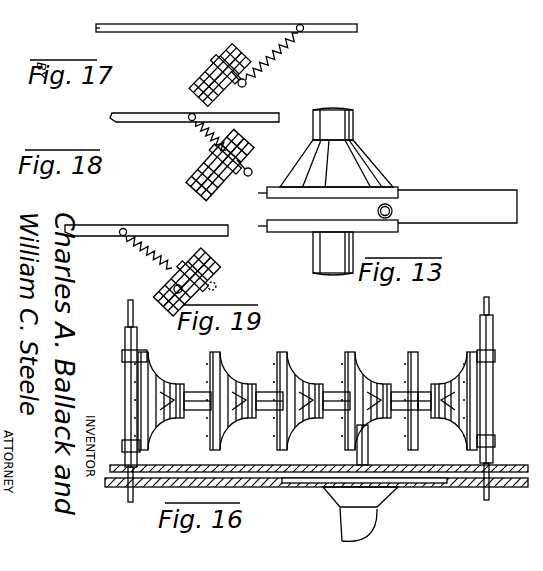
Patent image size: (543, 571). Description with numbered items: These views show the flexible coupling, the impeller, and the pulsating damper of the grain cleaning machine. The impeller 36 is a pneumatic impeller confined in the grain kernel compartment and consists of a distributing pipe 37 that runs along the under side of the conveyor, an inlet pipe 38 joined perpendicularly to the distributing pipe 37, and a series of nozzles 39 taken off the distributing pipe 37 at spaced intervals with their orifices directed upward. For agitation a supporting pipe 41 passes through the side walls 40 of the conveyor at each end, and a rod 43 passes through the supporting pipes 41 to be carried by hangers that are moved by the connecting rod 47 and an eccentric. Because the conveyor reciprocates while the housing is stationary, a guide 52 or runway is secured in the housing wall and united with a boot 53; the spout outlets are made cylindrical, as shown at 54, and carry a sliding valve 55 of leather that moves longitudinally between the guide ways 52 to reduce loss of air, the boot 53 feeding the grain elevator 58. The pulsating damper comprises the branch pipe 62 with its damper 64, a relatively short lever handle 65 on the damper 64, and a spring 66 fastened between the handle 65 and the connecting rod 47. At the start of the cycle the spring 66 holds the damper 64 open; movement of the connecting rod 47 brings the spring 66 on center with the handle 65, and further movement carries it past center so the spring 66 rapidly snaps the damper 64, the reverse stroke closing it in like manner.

In FIG. 16, the pneumatic impeller 36 is at (327, 394).
In FIG. 16, the distributing pipe 37 is at (362, 385).
In FIG. 16, the inlet pipe 38 is at (368, 440).
In FIG. 16, the nozzles 39 is at (285, 353).
In FIG. 16, the side walls 40 is at (509, 465).
In FIG. 16, the supporting pipe 41 is at (489, 343).
In FIG. 16, the rod 43 is at (489, 313).
In FIG. 17, the connecting rod 47 is at (233, 25).
In FIG. 18, the connecting rod 47 is at (272, 112).
In FIG. 19, the connecting rod 47 is at (187, 228).
In FIG. 13, the guide 52 is at (400, 185).
In FIG. 16, the guide 52 is at (398, 490).
In FIG. 13, the boot 53 is at (345, 168).
In FIG. 13, the cylindrical spout outlet 54 is at (393, 213).
In FIG. 13, the sliding valve 55 is at (387, 208).
In FIG. 16, the sliding valve 55 is at (447, 486).
In FIG. 13, the grain elevator 58 is at (325, 252).
In FIG. 17, the branch pipe 62 is at (206, 69).
In FIG. 18, the branch pipe 62 is at (206, 164).
In FIG. 19, the branch pipe 62 is at (222, 275).
In FIG. 17, the damper 64 is at (244, 52).
In FIG. 18, the damper 64 is at (250, 148).
In FIG. 19, the damper 64 is at (213, 263).
In FIG. 17, the lever handle 65 is at (236, 86).
In FIG. 18, the lever handle 65 is at (243, 175).
In FIG. 19, the lever handle 65 is at (217, 289).
In FIG. 17, the spring 66 is at (283, 45).
In FIG. 18, the spring 66 is at (198, 130).
In FIG. 19, the spring 66 is at (152, 265).